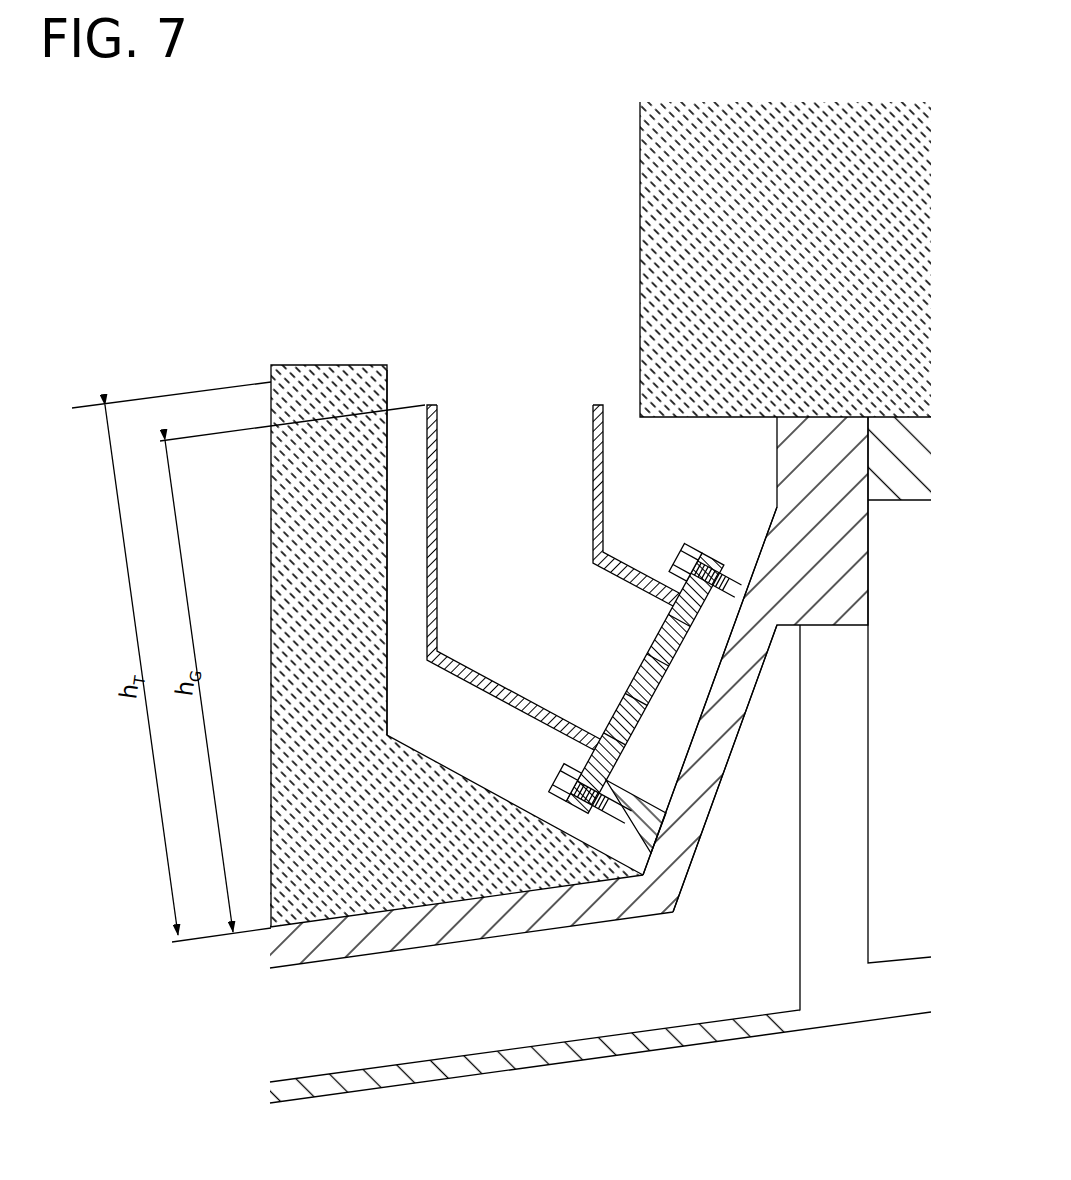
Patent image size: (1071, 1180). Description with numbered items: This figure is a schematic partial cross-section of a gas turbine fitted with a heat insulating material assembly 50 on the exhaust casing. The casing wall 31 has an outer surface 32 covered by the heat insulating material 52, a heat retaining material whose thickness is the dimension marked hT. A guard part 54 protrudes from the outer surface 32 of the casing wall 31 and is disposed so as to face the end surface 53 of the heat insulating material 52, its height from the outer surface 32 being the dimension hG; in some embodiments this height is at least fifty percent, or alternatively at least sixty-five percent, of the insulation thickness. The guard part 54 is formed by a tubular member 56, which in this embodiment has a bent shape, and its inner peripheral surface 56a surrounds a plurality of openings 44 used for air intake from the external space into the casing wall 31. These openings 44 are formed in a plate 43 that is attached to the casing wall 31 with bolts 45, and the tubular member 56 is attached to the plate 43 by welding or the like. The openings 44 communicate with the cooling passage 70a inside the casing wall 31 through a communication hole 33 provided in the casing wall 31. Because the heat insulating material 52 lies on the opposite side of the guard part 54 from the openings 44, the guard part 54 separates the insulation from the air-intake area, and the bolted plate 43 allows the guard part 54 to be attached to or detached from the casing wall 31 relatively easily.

The casing wall 31 is at (569, 710).
The outer surface 32 is at (477, 893).
The communication hole 33 is at (697, 821).
The plate 43 is at (642, 679).
The openings 44 is at (648, 657).
The bolts 45 is at (560, 770).
The heat insulating material assembly 50 is at (600, 514).
The heat insulating material 52 is at (313, 365).
The end surface 53 is at (387, 694).
The guard part 54 is at (584, 571).
The tubular member 56 is at (553, 577).
The inner peripheral surface 56a is at (437, 519).
The cooling passage 70a is at (612, 1003).